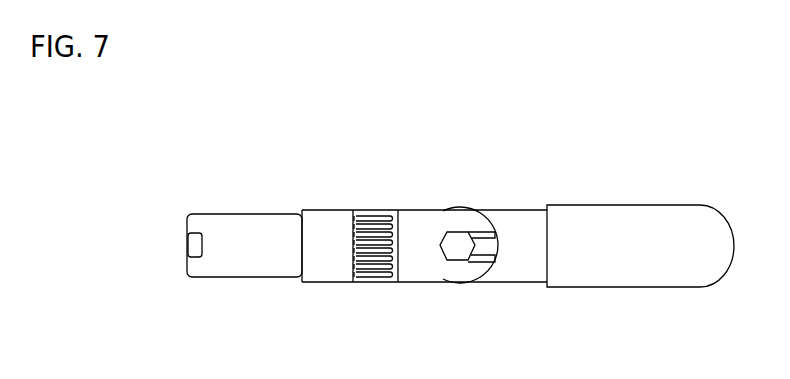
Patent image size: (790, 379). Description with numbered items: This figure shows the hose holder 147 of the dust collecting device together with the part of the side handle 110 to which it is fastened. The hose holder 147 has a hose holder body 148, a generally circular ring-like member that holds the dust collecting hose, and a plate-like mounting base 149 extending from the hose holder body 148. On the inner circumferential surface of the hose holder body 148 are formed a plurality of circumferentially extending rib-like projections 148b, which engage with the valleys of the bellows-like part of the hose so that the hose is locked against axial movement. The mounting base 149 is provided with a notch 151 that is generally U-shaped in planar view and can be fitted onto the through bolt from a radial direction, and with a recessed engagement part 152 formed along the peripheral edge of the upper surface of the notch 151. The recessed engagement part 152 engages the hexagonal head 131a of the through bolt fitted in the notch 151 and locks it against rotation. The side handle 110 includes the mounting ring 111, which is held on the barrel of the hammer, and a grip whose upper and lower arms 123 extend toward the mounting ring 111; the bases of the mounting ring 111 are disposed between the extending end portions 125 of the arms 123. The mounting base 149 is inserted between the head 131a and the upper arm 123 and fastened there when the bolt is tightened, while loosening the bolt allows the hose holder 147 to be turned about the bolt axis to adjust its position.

The side handle 110 is at (585, 196).
The mounting ring 111 is at (225, 209).
The arm 123 is at (651, 213).
The extending end portion 125 is at (508, 250).
The hexagonal head 131a is at (457, 242).
The hose holder 147 is at (309, 203).
The hose holder body 148 is at (317, 272).
The rib-like projection 148b is at (373, 221).
The mounting base 149 is at (425, 260).
The notch 151 is at (479, 236).
The recessed engagement part 152 is at (483, 254).